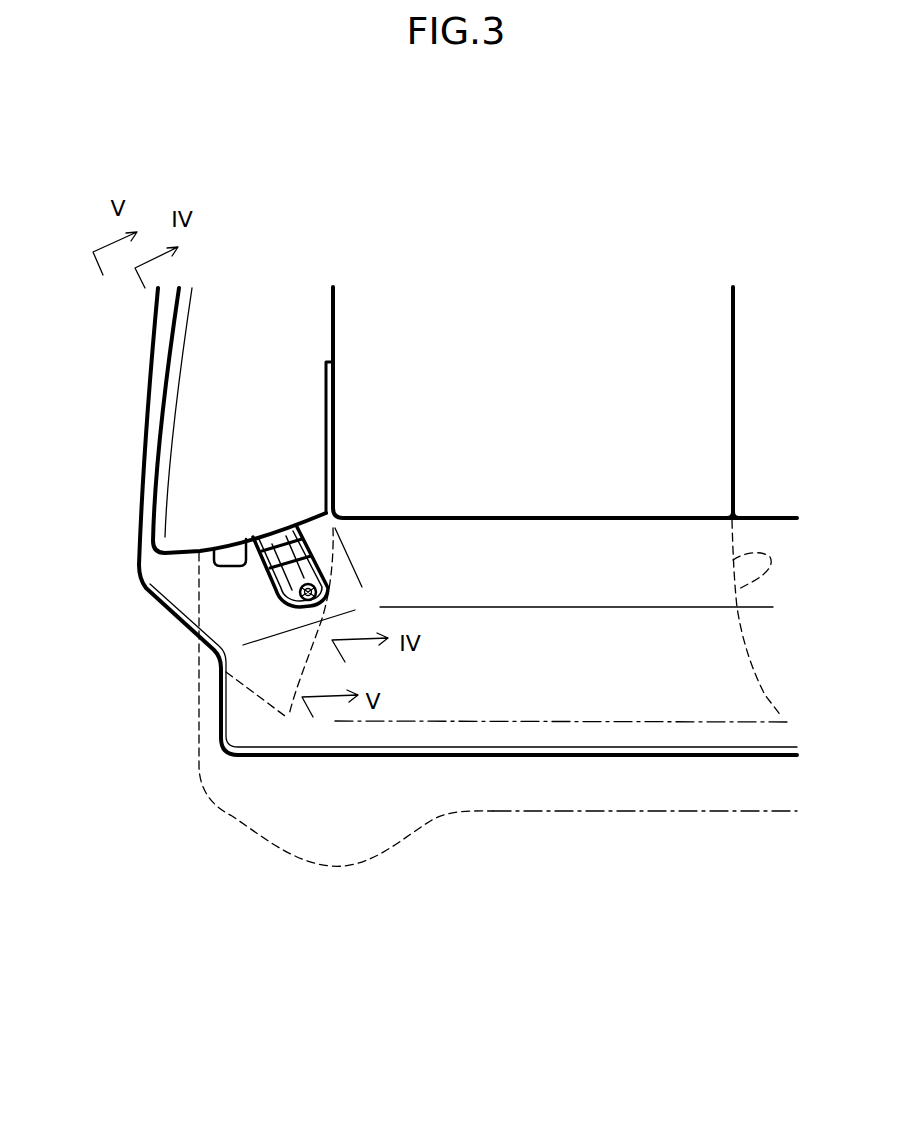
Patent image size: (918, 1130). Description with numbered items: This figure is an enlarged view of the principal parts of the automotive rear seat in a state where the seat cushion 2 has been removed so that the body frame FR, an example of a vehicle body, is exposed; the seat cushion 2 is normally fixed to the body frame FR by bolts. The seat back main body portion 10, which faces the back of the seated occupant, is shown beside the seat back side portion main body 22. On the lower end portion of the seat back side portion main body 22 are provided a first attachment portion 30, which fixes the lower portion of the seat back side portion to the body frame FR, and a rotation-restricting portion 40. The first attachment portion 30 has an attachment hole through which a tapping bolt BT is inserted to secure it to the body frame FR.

The seat back main body portion 10 is at (510, 363).
The seat back side portion main body 22 is at (148, 448).
The first attachment portion 30 is at (276, 614).
The rotation-restricting portion 40 is at (220, 582).
The seat cushion 2 is at (621, 814).
The tapping bolt BT is at (322, 582).
The body frame FR is at (183, 583).